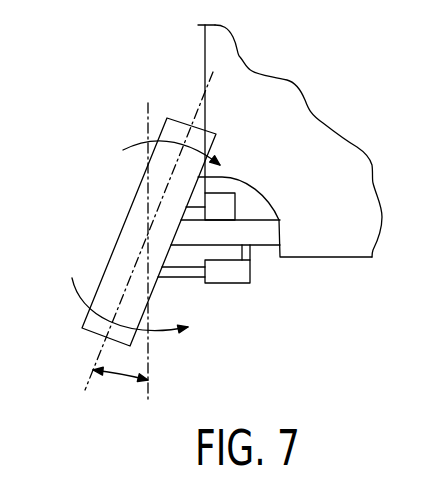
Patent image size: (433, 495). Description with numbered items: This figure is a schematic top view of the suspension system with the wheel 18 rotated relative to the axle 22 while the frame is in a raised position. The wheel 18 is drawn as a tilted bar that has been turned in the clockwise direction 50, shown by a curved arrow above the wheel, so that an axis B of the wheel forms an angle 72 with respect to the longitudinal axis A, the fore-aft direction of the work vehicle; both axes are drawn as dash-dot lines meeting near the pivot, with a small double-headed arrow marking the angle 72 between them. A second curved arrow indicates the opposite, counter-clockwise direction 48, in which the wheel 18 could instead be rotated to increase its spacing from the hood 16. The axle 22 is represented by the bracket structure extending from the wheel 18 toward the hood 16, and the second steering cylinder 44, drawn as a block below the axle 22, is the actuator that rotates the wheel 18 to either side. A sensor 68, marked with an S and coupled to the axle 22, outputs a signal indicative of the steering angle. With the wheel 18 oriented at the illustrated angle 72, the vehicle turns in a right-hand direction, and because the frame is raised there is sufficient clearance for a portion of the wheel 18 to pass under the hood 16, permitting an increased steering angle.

The hood 16 is at (205, 47).
The wheel 18 is at (131, 207).
The axle 22 is at (262, 237).
The second steering cylinder 44 is at (227, 283).
The counter-clockwise direction 48 is at (160, 335).
The clockwise direction 50 is at (138, 143).
The sensor 68 is at (226, 177).
The angle 72 is at (118, 381).
The longitudinal axis A is at (148, 390).
The axis of the wheel B is at (88, 383).